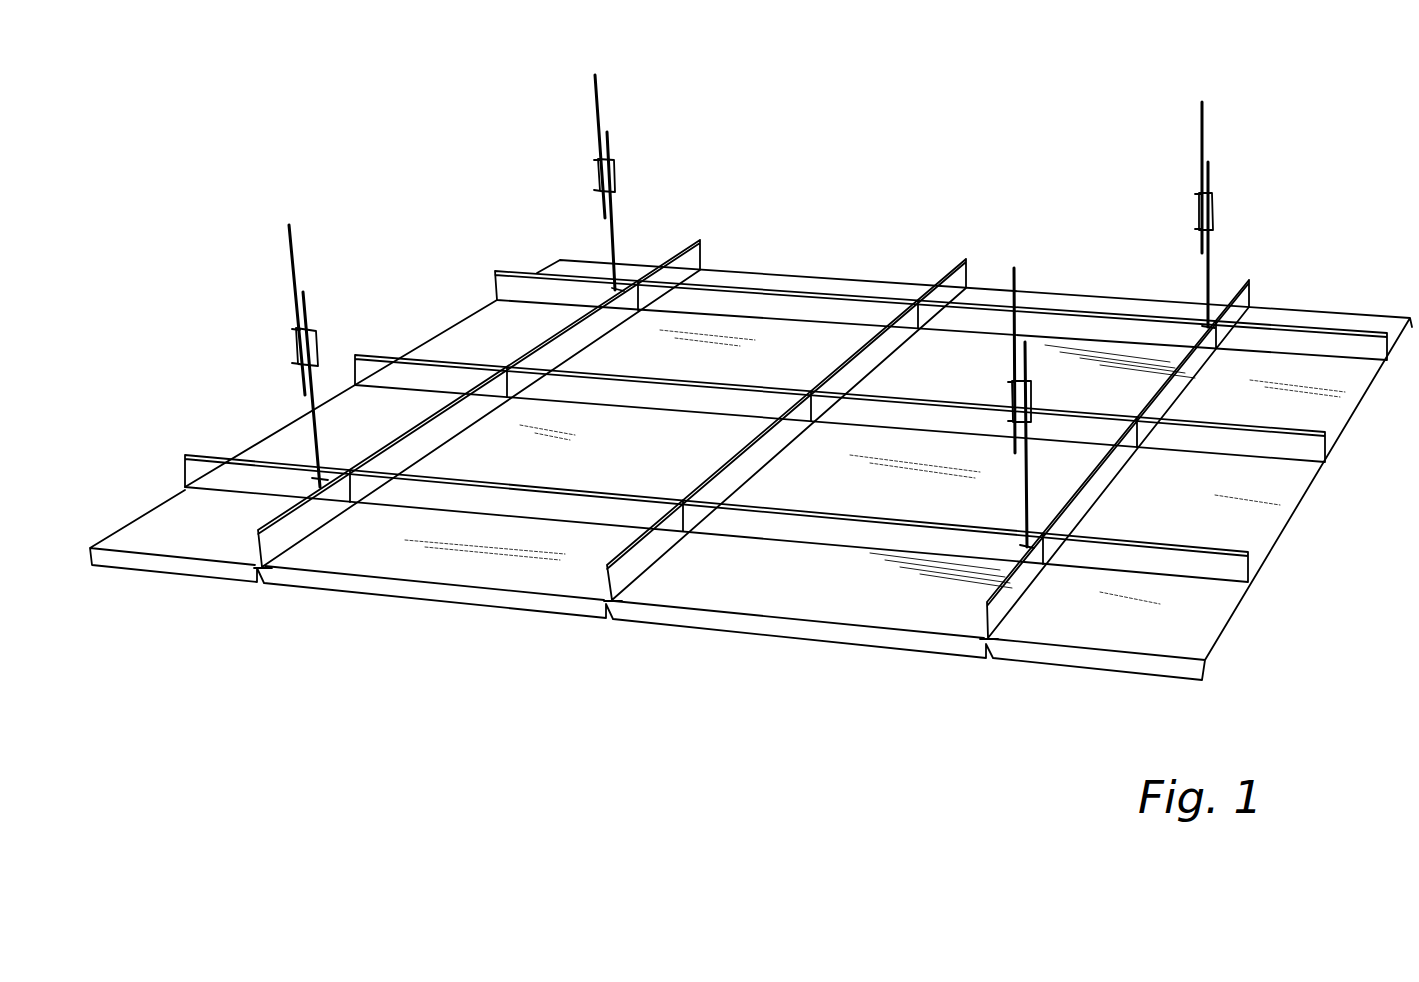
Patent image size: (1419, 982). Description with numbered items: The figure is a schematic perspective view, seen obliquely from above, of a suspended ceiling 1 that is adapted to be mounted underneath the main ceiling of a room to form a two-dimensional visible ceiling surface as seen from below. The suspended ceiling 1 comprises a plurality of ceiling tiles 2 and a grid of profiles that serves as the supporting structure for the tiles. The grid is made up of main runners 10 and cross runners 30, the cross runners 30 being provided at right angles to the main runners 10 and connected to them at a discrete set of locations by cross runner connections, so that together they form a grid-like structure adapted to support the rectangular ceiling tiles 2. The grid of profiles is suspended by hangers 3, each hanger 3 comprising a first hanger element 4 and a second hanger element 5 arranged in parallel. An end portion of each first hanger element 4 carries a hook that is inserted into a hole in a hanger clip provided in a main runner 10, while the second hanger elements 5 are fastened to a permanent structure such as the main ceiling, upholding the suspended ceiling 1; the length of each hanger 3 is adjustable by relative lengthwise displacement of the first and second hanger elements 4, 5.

The suspended ceiling 1 is at (877, 139).
The ceiling tile 2 is at (1115, 305).
The hanger 3 is at (1232, 186).
The first hanger element 4 is at (1208, 262).
The second hanger element 5 is at (1203, 132).
The main runner 10 is at (549, 362).
The cross runner 30 is at (634, 397).